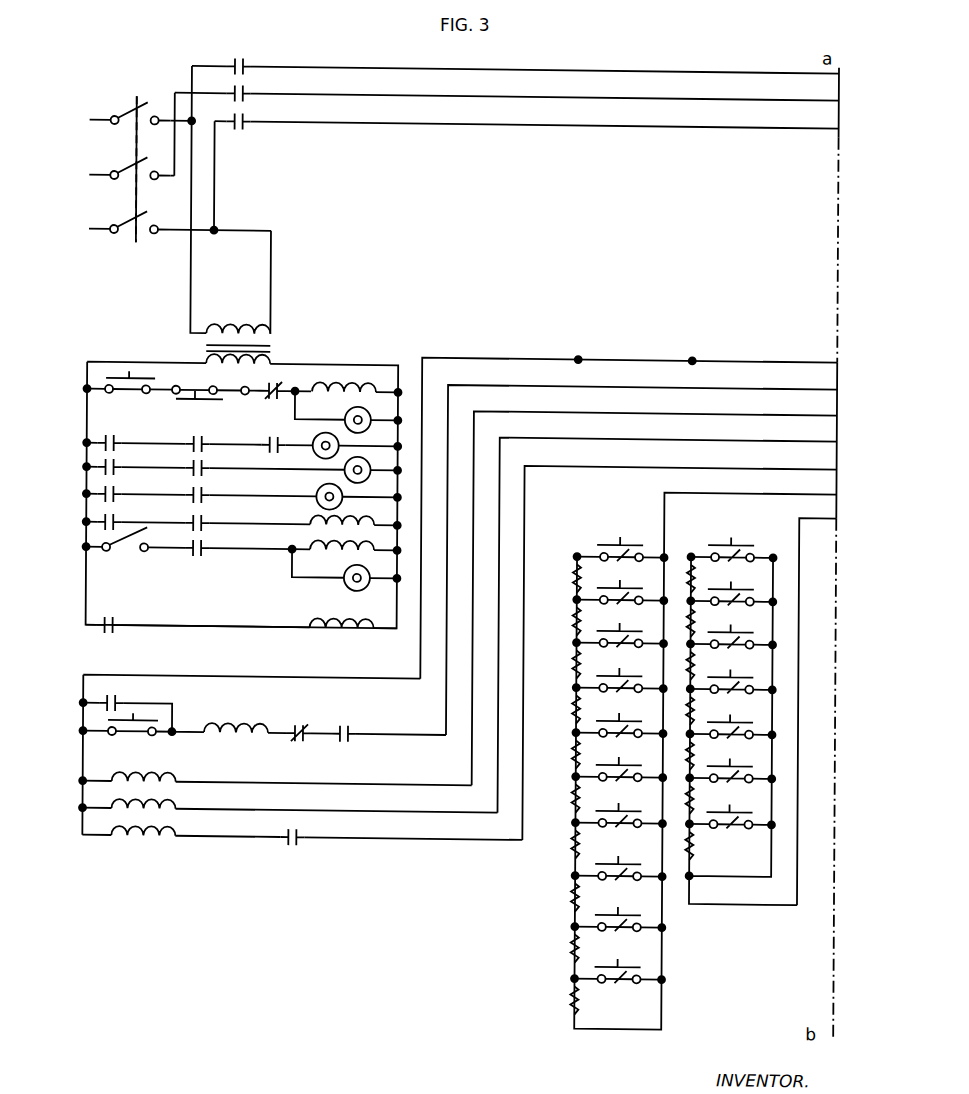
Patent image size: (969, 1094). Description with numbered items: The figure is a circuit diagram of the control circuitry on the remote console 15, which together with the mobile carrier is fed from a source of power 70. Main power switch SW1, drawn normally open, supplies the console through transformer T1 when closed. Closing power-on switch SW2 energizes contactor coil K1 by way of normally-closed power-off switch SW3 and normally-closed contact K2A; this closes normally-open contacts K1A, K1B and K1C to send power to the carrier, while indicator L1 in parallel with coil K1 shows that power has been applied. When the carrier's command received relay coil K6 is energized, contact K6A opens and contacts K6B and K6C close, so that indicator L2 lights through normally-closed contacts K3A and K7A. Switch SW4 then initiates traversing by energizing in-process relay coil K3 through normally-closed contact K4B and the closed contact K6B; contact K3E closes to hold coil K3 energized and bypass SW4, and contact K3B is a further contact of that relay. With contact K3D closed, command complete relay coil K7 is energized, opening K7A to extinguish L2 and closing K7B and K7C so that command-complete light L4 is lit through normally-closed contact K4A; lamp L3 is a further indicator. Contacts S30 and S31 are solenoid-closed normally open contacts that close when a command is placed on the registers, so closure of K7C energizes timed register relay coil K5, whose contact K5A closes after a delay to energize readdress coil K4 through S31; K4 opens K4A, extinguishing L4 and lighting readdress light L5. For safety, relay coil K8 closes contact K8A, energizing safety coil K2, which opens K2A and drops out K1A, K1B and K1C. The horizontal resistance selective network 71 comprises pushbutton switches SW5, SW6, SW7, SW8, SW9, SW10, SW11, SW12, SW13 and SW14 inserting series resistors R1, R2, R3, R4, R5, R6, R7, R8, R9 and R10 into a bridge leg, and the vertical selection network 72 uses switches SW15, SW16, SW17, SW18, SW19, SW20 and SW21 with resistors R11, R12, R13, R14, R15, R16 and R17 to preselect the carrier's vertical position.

The source of power 70 is at (88, 163).
The main power switch SW1 is at (132, 238).
The normally-open contact K1A is at (246, 62).
The normally-open contact K1B is at (246, 90).
The normally-open contact K1C is at (246, 118).
The transformer T1 is at (276, 343).
The power-on switch SW2 is at (129, 371).
The power-off switch SW3 is at (196, 390).
The normally-closed contact K2A is at (283, 383).
The contactor coil K1 is at (343, 382).
The indicator L1 is at (347, 416).
The normally open contact K6C is at (118, 446).
The normally closed contact K3A is at (207, 443).
The normally closed contact K7A is at (275, 438).
The visual indicator L2 is at (317, 450).
The contact K3B is at (118, 470).
The normally closed contact K6A is at (208, 470).
The indicator lamp L3 is at (347, 472).
The normally open contact K7B is at (118, 497).
The normally closed contact K4A is at (208, 497).
The command-complete light L4 is at (320, 500).
The normally open contact K7C is at (118, 525).
The solenoid contact S30 is at (208, 525).
The timed register relay coil K5 is at (318, 528).
The normally open contact K5A is at (131, 541).
The solenoid contact S31 is at (208, 550).
The readdress coil K4 is at (318, 555).
The readdress light L5 is at (347, 584).
The normally open contact K8A is at (119, 632).
The safety coil K2 is at (345, 634).
The remote console 15 is at (300, 821).
The normally open contact K3E is at (123, 708).
The switch SW4 is at (162, 719).
The in-process relay coil K3 is at (245, 722).
The normally closed contact K4B is at (305, 722).
The normally open contact K6B is at (352, 729).
The command received relay coil K6 is at (182, 778).
The safety relay coil K8 is at (182, 806).
The command complete relay coil K7 is at (182, 834).
The normally open contact K3D is at (297, 846).
The resistance selective network 71 is at (592, 811).
The resistor R1 is at (577, 566).
The resistor R2 is at (577, 609).
The resistor R3 is at (577, 652).
The resistor R4 is at (577, 697).
The resistor R5 is at (577, 742).
The resistor R6 is at (577, 786).
The resistor R7 is at (577, 832).
The resistor R8 is at (577, 885).
The resistor R9 is at (577, 936).
The resistor R10 is at (577, 988).
The horizontal position switch SW5 is at (616, 984).
The horizontal position switch SW6 is at (617, 932).
The horizontal position switch SW7 is at (617, 881).
The horizontal position switch SW8 is at (617, 828).
The horizontal position switch SW9 is at (618, 782).
The horizontal position switch SW10 is at (618, 738).
The horizontal position switch SW11 is at (618, 693).
The horizontal position switch SW12 is at (618, 648).
The horizontal position switch SW13 is at (619, 605).
The horizontal position switch SW14 is at (619, 562).
The vertical selection network 72 is at (768, 740).
The resistor R11 is at (697, 835).
The resistor R12 is at (697, 789).
The resistor R13 is at (697, 745).
The resistor R14 is at (697, 700).
The resistor R15 is at (697, 655).
The resistor R16 is at (697, 612).
The resistor R17 is at (697, 568).
The vertical position switch SW15 is at (758, 806).
The vertical position switch SW16 is at (758, 760).
The vertical position switch SW17 is at (758, 716).
The vertical position switch SW18 is at (758, 671).
The vertical position switch SW19 is at (758, 626).
The vertical position switch SW20 is at (758, 583).
The vertical position switch SW21 is at (758, 539).